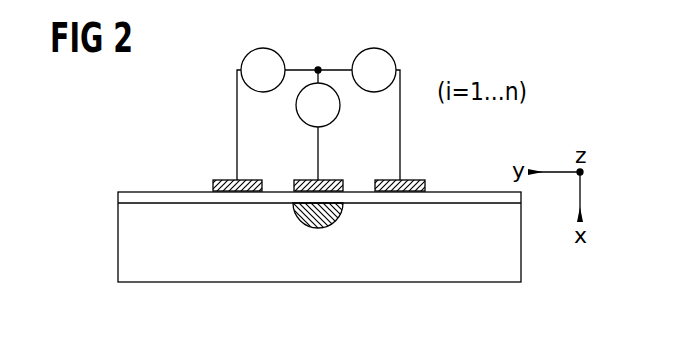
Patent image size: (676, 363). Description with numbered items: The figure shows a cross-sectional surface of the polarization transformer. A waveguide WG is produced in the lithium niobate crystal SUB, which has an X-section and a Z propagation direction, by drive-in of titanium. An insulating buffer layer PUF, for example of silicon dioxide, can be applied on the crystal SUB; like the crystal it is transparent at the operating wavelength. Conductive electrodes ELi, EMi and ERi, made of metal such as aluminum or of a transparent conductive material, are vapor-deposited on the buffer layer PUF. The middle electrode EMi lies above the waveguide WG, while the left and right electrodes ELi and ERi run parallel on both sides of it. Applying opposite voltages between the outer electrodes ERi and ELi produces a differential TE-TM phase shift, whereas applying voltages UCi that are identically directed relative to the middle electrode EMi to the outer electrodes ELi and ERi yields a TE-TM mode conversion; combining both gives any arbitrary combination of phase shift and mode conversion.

The control voltage UCi is at (291, 90).
The left electrode ELi is at (223, 180).
The middle electrode EMi is at (335, 180).
The right electrode ERi is at (413, 180).
The crystal SUB is at (132, 242).
The insulating buffer layer PUF is at (285, 204).
The waveguide WG is at (335, 220).